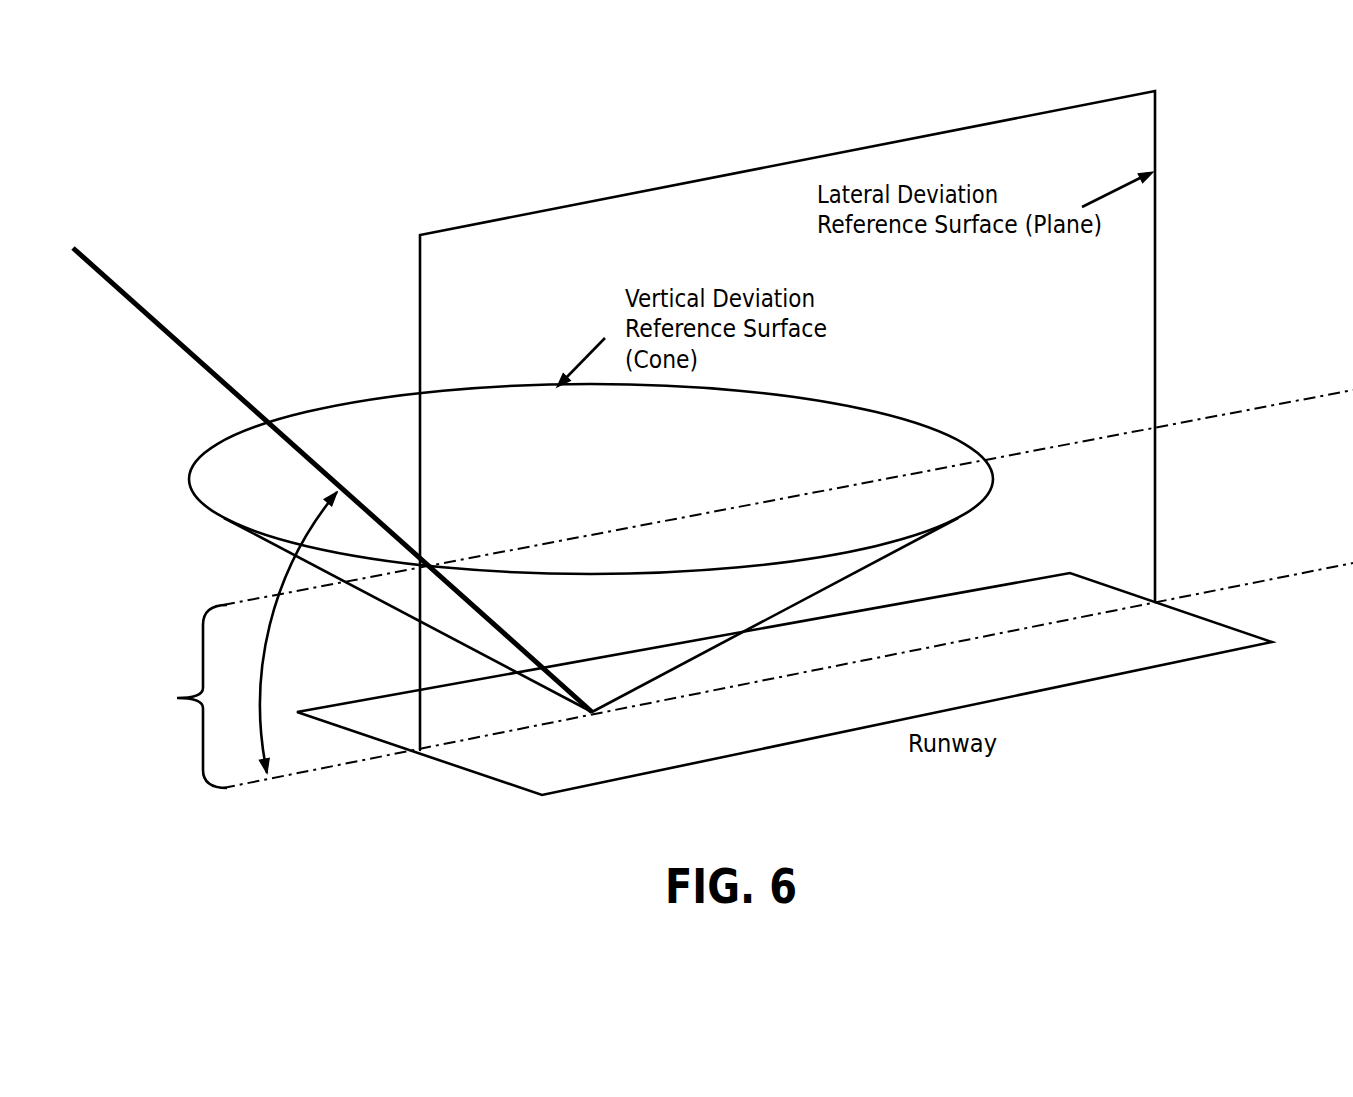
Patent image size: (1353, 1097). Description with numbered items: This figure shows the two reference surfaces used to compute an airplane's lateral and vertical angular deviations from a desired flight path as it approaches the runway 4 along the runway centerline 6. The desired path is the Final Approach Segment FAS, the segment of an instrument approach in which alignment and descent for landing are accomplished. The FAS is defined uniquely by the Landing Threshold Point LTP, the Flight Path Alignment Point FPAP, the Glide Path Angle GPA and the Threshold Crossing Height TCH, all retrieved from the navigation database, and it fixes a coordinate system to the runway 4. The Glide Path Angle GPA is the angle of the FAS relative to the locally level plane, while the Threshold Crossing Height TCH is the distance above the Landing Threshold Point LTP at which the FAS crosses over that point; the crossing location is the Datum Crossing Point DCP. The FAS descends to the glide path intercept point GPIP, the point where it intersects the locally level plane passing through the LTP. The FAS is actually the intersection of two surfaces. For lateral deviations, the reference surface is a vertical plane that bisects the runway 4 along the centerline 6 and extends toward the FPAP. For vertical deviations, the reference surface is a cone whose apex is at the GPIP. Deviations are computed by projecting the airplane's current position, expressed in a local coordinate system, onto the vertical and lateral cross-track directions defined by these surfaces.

The runway 4 is at (1147, 670).
The runway centerline 6 is at (758, 683).
The Final Approach Segment FAS is at (332, 480).
The Glide Path Angle GPA is at (298, 632).
The Threshold Crossing Height TCH is at (173, 696).
The Datum Crossing Point DCP is at (447, 548).
The glide path intercept point GPIP is at (597, 731).
The Landing Threshold Point LTP is at (416, 776).
The Flight Path Alignment Point FPAP is at (1206, 579).